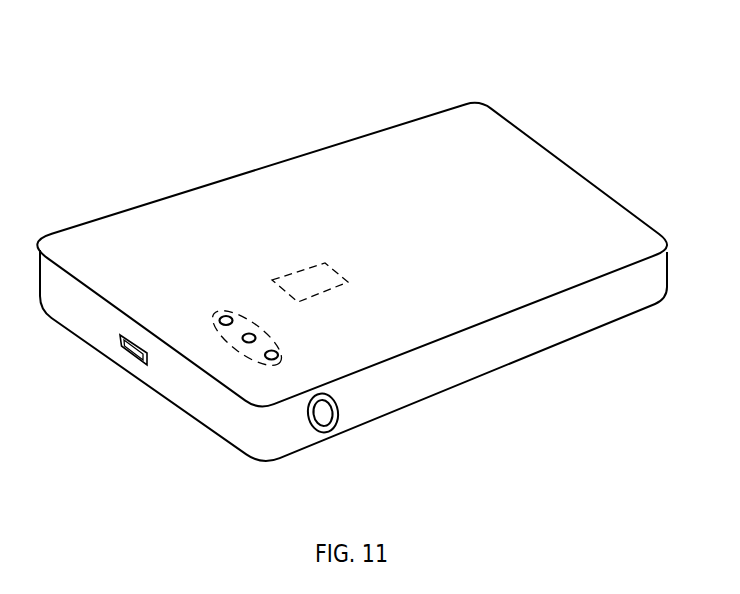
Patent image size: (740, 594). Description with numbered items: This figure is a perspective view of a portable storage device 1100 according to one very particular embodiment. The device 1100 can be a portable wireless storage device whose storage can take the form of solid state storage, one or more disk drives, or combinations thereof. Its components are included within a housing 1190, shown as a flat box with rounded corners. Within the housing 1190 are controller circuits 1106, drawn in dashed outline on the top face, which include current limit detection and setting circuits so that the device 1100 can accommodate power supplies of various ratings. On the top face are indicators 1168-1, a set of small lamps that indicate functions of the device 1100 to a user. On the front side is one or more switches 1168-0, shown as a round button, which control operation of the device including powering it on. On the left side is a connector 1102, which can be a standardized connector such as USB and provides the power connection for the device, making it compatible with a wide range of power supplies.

The device 1100 is at (603, 117).
The housing 1190 is at (445, 185).
The controller circuits 1106 is at (306, 283).
The indicators 1168-1 is at (252, 320).
The switches 1168-0 is at (325, 412).
The connector 1102 is at (127, 351).